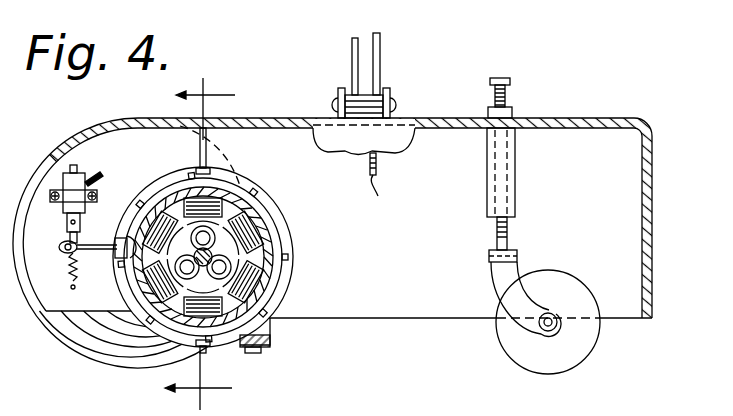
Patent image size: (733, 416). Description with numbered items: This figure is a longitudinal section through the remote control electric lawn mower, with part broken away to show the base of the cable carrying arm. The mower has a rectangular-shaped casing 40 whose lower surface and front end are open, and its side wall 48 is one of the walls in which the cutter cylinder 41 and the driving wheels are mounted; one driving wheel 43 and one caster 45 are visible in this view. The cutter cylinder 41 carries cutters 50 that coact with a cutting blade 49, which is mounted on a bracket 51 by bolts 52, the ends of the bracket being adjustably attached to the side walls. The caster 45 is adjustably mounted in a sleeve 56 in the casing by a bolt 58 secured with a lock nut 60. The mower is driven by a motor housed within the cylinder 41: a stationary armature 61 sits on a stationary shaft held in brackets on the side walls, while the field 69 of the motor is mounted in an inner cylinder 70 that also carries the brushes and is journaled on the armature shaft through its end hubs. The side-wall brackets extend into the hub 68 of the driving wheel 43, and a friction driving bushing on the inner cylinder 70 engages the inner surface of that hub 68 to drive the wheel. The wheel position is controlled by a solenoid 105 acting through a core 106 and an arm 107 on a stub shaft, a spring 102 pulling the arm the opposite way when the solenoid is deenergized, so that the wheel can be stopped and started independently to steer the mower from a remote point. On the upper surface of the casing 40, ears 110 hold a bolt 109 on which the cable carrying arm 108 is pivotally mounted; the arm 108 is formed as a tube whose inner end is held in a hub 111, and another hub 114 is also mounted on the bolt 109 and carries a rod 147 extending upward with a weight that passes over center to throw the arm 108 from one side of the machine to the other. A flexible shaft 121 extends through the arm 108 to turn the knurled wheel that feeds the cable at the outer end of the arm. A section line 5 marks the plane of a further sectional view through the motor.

The section line 5 is at (207, 244).
The casing 40 is at (640, 122).
The cutter cylinder 41 is at (236, 192).
The driving wheel 43 is at (65, 340).
The caster 45 is at (586, 347).
The side wall 48 is at (428, 312).
The cutting blade 49 is at (206, 352).
The cutters 50 is at (268, 193).
The bracket 51 is at (277, 327).
The bolts 52 is at (266, 345).
The sleeve 56 is at (511, 191).
The bolt 58 is at (496, 241).
The lock nut 60 is at (510, 111).
The stationary armature 61 is at (193, 232).
The hub 68 is at (115, 322).
The field 69 is at (274, 240).
The inner cylinder 70 is at (258, 283).
The springs 102 is at (70, 272).
The solenoid 105 is at (78, 182).
The core 106 is at (67, 228).
The arm 107 is at (100, 258).
The cable carrying arm 108 is at (380, 41).
The bolt 109 is at (392, 100).
The ears 110 is at (335, 112).
The hub 111 is at (382, 93).
The hub 114 is at (350, 93).
The flexible shaft 121 is at (378, 184).
The rod 147 is at (355, 40).